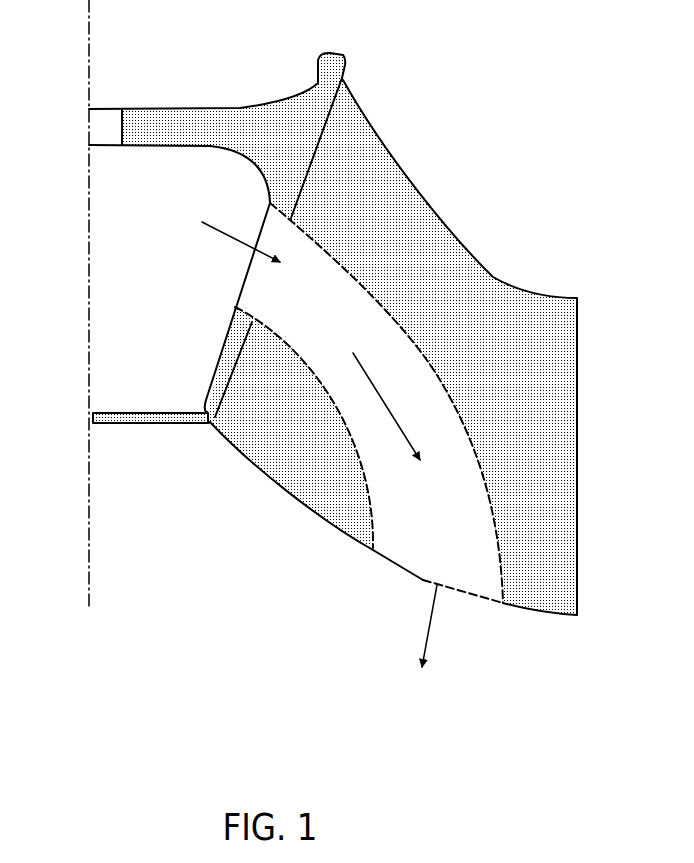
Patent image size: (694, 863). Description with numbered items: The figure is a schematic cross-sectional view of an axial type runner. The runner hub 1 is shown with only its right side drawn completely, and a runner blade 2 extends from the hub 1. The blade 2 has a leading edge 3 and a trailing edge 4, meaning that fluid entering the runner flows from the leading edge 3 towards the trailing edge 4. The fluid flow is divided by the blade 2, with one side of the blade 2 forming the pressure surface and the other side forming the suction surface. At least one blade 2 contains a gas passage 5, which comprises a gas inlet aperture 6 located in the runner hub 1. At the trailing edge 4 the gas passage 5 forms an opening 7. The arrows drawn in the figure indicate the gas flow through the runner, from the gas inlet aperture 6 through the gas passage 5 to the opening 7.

The runner hub 1 is at (282, 122).
The runner blade 2 is at (283, 423).
The leading edge 3 is at (493, 277).
The trailing edge 4 is at (320, 520).
The gas passage 5 is at (473, 562).
The gas inlet aperture 6 is at (235, 285).
The opening 7 is at (423, 578).